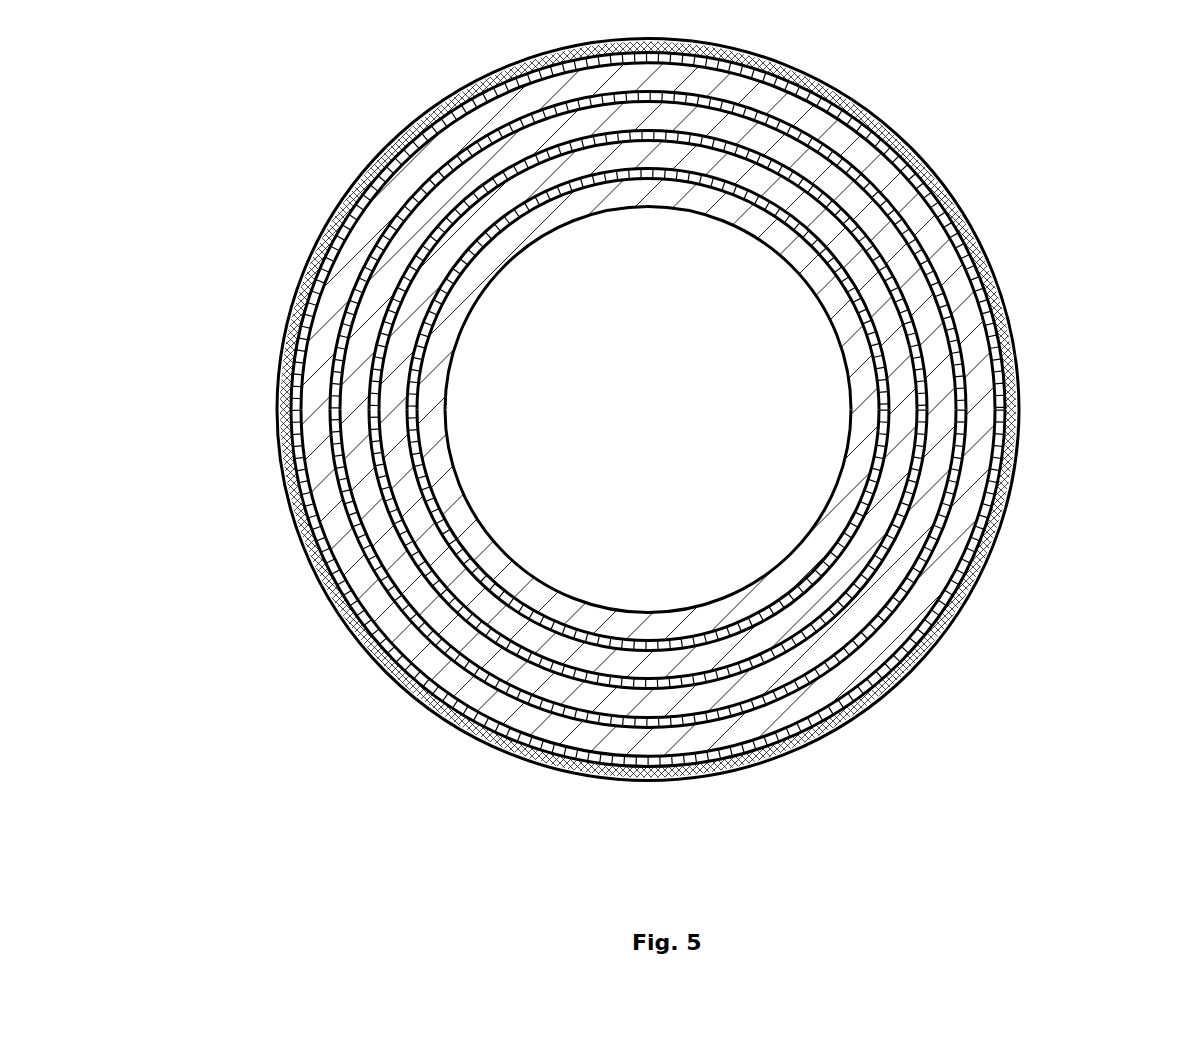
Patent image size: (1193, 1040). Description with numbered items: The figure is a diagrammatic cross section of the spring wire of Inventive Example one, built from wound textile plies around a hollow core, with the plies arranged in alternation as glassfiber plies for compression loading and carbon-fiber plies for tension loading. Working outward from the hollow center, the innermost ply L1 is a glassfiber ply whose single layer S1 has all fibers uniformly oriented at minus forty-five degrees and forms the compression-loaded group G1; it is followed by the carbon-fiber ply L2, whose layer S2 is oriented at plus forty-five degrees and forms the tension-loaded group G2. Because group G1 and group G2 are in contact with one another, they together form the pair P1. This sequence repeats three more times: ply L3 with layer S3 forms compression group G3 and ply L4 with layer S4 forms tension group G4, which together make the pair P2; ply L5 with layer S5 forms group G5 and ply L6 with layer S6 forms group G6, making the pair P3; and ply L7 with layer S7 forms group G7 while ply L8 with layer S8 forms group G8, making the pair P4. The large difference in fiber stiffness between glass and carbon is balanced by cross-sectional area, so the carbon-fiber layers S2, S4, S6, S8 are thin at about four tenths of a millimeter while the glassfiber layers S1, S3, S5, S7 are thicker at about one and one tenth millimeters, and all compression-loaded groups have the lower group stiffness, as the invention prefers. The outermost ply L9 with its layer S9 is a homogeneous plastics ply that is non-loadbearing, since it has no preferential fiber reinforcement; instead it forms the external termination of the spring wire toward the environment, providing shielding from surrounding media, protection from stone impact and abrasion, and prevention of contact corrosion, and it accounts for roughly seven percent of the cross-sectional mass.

The group 1 G1 is at (465, 288).
The group 2 G2 is at (427, 325).
The group 3 G3 is at (397, 357).
The group 4 G4 is at (370, 398).
The group 5 G5 is at (353, 440).
The group 6 G6 is at (343, 488).
The group 7 G7 is at (337, 533).
The group 8 G8 is at (320, 585).
The layer 1 S1 is at (847, 320).
The layer 2 S2 is at (887, 350).
The layer 3 S3 is at (903, 387).
The layer 4 S4 is at (927, 425).
The layer 5 S5 is at (940, 463).
The layer 6 S6 is at (950, 500).
The layer 7 S7 is at (960, 528).
The layer 8 S8 is at (970, 565).
The layer 9 S9 is at (975, 592).
The ply 1 L1 is at (598, 605).
The ply 2 L2 is at (645, 648).
The ply 3 L3 is at (689, 660).
The ply 4 L4 is at (760, 648).
The ply 5 L5 is at (805, 660).
The ply 6 L6 is at (855, 665).
The ply 7 L7 is at (880, 628).
The ply 8 L8 is at (930, 645).
The ply 9 L9 is at (962, 613).
The pair 1 P1 is at (455, 545).
The pair 2 P2 is at (470, 612).
The pair 3 P3 is at (485, 690).
The pair 4 P4 is at (540, 722).